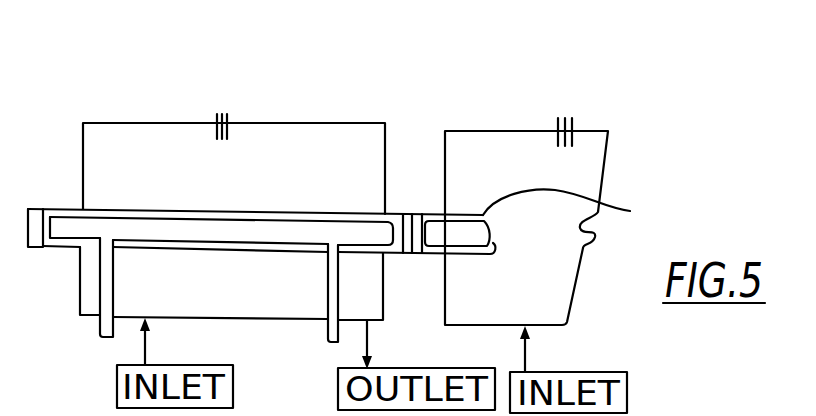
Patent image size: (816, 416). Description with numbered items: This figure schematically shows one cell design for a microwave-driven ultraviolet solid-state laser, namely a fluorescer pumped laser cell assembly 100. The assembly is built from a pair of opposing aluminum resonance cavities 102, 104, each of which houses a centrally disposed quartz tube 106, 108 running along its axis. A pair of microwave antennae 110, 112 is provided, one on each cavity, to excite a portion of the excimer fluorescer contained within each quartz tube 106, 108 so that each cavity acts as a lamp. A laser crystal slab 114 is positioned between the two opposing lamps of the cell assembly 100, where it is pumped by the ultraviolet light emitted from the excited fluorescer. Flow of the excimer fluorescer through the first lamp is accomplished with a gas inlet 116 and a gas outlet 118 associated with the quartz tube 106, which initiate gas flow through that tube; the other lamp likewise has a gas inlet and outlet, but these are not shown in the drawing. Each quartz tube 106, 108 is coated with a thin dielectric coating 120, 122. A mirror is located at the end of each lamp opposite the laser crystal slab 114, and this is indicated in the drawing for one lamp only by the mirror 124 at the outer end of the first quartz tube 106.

The fluorescer pumped laser cell assembly 100 is at (466, 104).
The aluminum resonance cavity 102 is at (100, 123).
The aluminum resonance cavity 104 is at (608, 131).
The quartz tube 106 is at (263, 216).
The quartz tube 108 is at (463, 216).
The microwave antenna 110 is at (237, 110).
The microwave antenna 112 is at (578, 116).
The laser crystal slab 114 is at (411, 217).
The gas inlet 116 is at (100, 334).
The gas outlet 118 is at (328, 333).
The thin dielectric coating 120 is at (112, 218).
The thin dielectric coating 122 is at (585, 214).
The mirror 124 is at (27, 207).